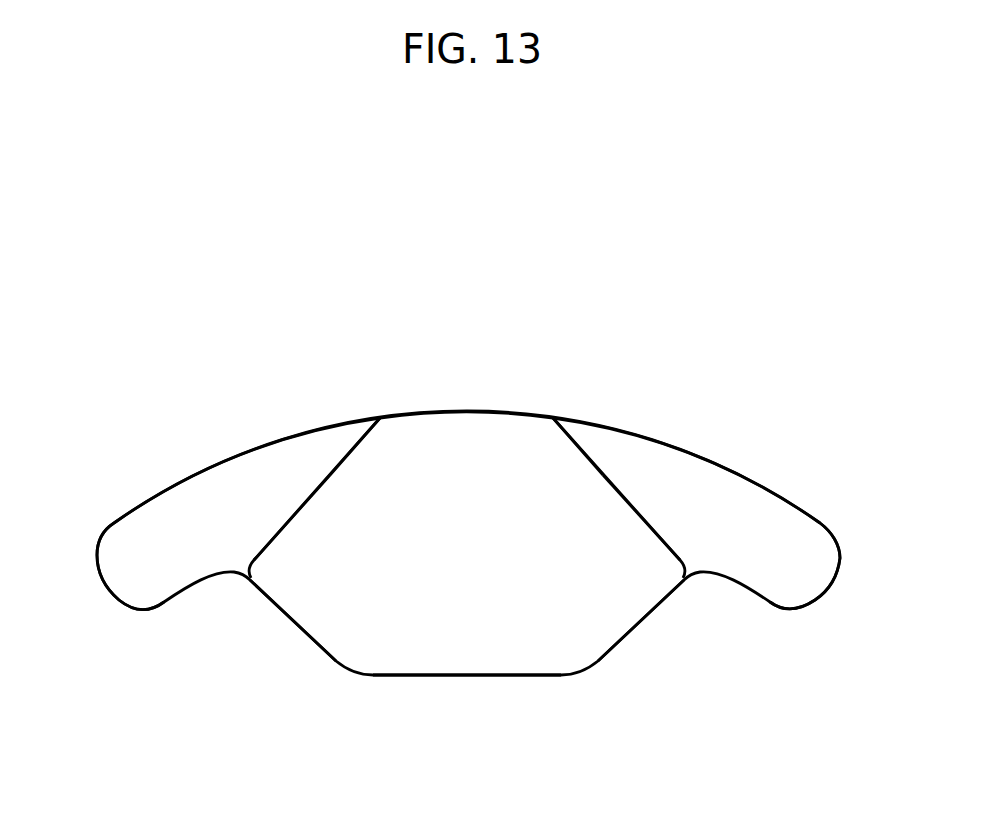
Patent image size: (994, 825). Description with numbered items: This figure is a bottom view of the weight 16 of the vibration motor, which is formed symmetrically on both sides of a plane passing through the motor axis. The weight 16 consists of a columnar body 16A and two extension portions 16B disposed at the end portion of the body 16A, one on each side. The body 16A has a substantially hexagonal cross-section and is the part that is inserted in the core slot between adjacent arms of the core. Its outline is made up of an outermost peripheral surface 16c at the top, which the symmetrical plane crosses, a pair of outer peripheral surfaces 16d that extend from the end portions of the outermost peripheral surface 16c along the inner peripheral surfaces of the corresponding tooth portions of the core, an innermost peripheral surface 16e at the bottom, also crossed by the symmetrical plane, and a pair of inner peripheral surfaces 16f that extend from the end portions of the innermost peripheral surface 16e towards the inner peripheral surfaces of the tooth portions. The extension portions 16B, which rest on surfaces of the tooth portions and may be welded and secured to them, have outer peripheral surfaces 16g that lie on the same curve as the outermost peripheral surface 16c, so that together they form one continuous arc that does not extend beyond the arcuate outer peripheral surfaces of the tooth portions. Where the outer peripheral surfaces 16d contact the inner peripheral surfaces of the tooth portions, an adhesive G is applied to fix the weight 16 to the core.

The weight 16 is at (590, 334).
The body 16A is at (418, 483).
The extension portions 16B is at (132, 537).
The outermost peripheral surface 16c is at (467, 412).
The outer peripheral surfaces 16d is at (295, 502).
The innermost peripheral surface 16e is at (468, 678).
The inner peripheral surfaces 16f is at (302, 632).
The outer peripheral surfaces 16g is at (177, 482).
The adhesive G is at (337, 460).